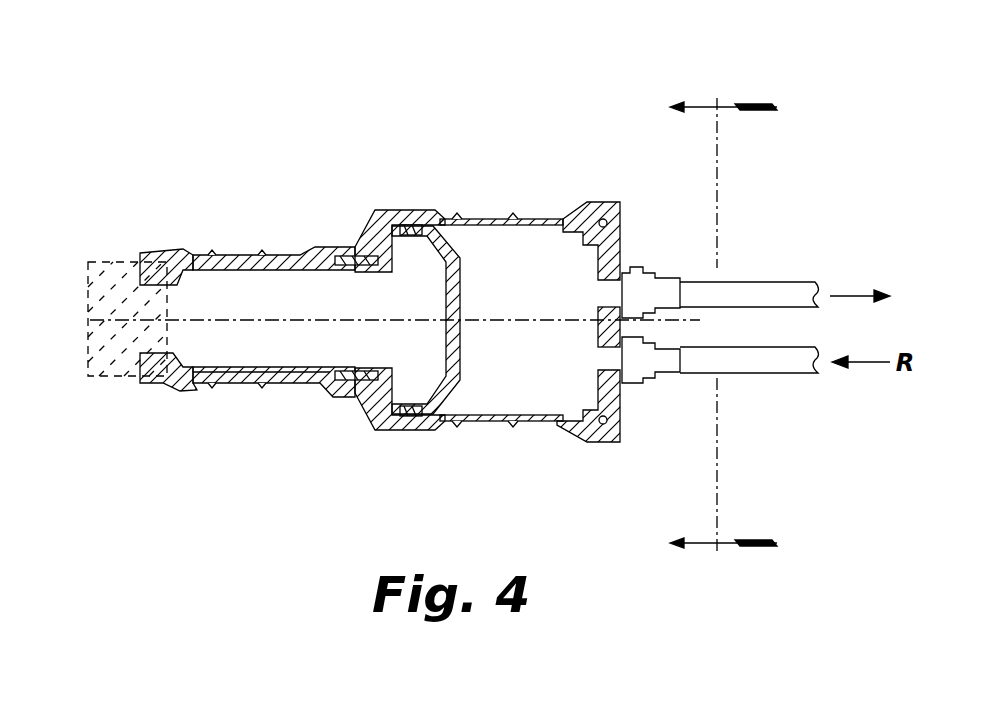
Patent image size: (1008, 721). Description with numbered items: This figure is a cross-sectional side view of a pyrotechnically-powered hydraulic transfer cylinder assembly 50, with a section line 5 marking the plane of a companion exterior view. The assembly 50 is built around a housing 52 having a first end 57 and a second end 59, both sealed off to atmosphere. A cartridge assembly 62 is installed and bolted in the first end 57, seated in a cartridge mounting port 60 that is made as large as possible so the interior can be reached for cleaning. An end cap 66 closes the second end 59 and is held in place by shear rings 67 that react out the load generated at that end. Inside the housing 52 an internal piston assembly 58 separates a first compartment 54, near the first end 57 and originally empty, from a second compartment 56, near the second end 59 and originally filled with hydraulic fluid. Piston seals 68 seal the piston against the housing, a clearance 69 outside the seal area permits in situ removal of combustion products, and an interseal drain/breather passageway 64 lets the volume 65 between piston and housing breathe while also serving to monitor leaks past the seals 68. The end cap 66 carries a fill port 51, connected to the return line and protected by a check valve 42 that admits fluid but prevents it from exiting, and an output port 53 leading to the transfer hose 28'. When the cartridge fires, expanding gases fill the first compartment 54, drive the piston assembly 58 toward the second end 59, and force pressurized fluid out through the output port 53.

The transfer cylinder assembly 50 is at (538, 76).
The section line 5- 5 is at (723, 330).
The cartridge assembly 62 is at (88, 305).
The first end 57 is at (157, 254).
The cartridge mounting port 60 is at (137, 352).
The first compartment 54 is at (215, 286).
The clearance 69 is at (222, 384).
The piston seals 68 is at (328, 396).
The housing 52 is at (390, 213).
The volume 65 is at (378, 226).
The interseal drain/breather passageway 64 is at (358, 418).
The piston assembly 58 is at (455, 385).
The second compartment 56 is at (497, 240).
The second end 59 is at (615, 210).
The end cap 66 is at (624, 252).
The fill port 51 is at (610, 360).
The shear rings 67 is at (603, 219).
The output port 53 is at (633, 285).
The check valve 42 is at (678, 378).
The transfer hose 28' is at (785, 299).